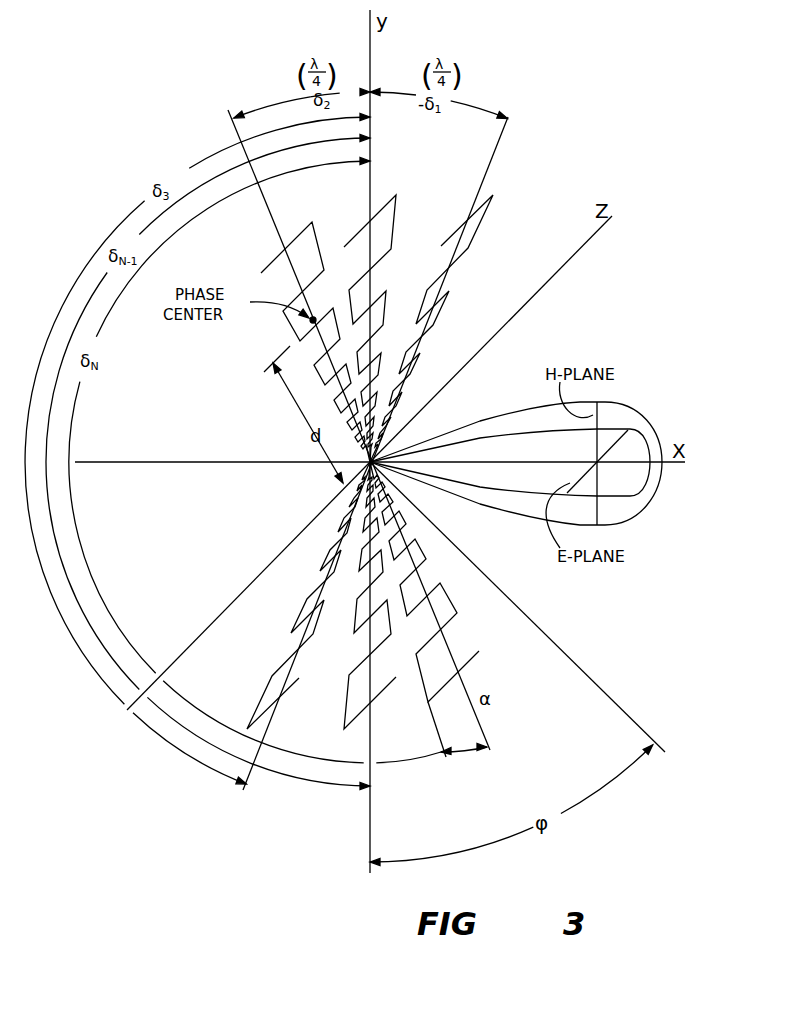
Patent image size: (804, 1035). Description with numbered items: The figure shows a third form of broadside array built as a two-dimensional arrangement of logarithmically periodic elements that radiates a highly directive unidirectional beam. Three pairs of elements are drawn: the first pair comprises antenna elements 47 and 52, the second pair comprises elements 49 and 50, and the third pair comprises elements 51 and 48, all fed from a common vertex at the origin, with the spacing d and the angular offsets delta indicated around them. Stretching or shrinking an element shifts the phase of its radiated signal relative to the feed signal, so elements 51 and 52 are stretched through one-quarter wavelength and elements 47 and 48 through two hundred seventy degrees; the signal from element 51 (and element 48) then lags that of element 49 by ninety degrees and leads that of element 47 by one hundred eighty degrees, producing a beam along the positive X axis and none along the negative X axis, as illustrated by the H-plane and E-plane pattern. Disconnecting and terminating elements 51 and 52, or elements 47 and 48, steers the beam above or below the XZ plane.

The antenna element 47 is at (270, 250).
The antenna element 48 is at (476, 668).
The antenna element 49 is at (381, 200).
The antenna element 50 is at (363, 712).
The antenna element 51 is at (457, 223).
The antenna element 52 is at (284, 703).